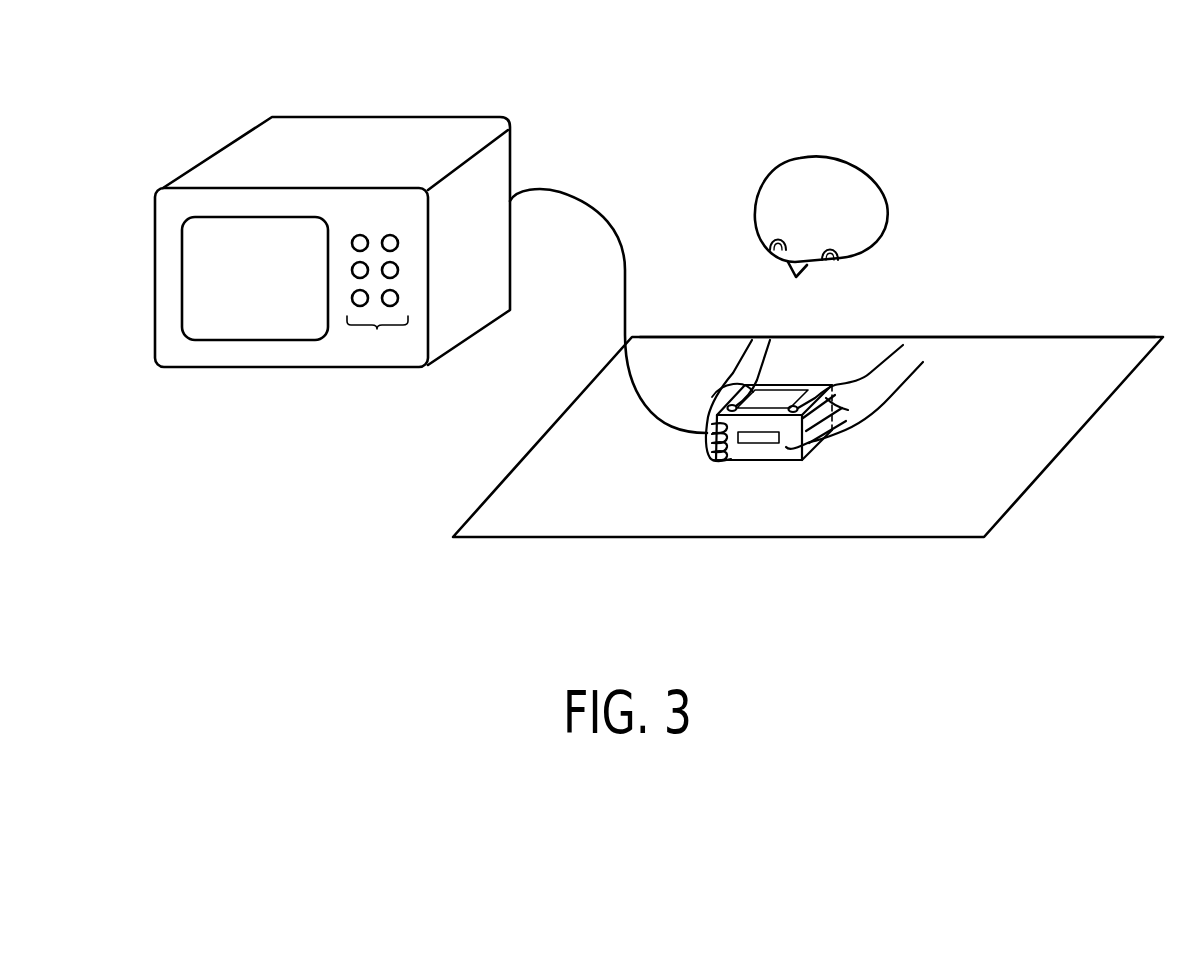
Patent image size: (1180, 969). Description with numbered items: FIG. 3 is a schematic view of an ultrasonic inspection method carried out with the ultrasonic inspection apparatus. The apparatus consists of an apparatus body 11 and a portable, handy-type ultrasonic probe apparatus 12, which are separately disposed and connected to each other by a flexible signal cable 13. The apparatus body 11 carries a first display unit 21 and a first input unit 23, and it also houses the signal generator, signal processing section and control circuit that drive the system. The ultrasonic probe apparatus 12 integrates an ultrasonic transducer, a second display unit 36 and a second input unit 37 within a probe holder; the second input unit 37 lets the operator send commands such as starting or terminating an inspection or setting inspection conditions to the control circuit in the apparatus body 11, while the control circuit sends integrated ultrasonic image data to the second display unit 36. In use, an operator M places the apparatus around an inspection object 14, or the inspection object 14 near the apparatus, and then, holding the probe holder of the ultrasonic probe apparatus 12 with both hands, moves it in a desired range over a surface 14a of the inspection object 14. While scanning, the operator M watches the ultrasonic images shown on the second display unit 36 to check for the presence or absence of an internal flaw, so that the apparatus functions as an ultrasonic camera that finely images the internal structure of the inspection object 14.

The apparatus body 11 is at (389, 113).
The first display unit 21 is at (255, 340).
The first input unit 23 is at (376, 329).
The flexible signal cable 13 is at (592, 200).
The ultrasonic probe apparatus 12 is at (797, 379).
The second display unit 36 is at (709, 396).
The second input unit 37 is at (758, 447).
The inspection object 14 is at (1086, 428).
The surface of the inspection object 14a is at (1029, 350).
The operator M is at (855, 157).